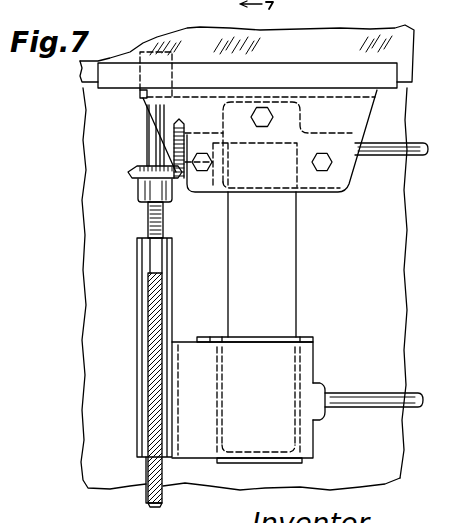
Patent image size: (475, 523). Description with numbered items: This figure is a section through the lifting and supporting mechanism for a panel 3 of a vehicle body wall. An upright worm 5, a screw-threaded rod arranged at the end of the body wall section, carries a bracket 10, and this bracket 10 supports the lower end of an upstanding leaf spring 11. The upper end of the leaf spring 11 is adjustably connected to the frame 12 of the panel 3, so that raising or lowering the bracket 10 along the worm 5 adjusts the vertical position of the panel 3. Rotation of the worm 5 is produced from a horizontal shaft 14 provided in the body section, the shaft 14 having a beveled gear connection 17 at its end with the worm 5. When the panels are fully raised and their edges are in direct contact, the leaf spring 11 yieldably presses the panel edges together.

The panel 3 is at (304, 32).
The frame 12 is at (303, 65).
The beveled gear connection 17 is at (134, 159).
The worm 5 is at (163, 232).
The bracket 10 is at (184, 332).
The leaf spring 11 is at (296, 283).
The horizontal shaft 14 is at (373, 157).